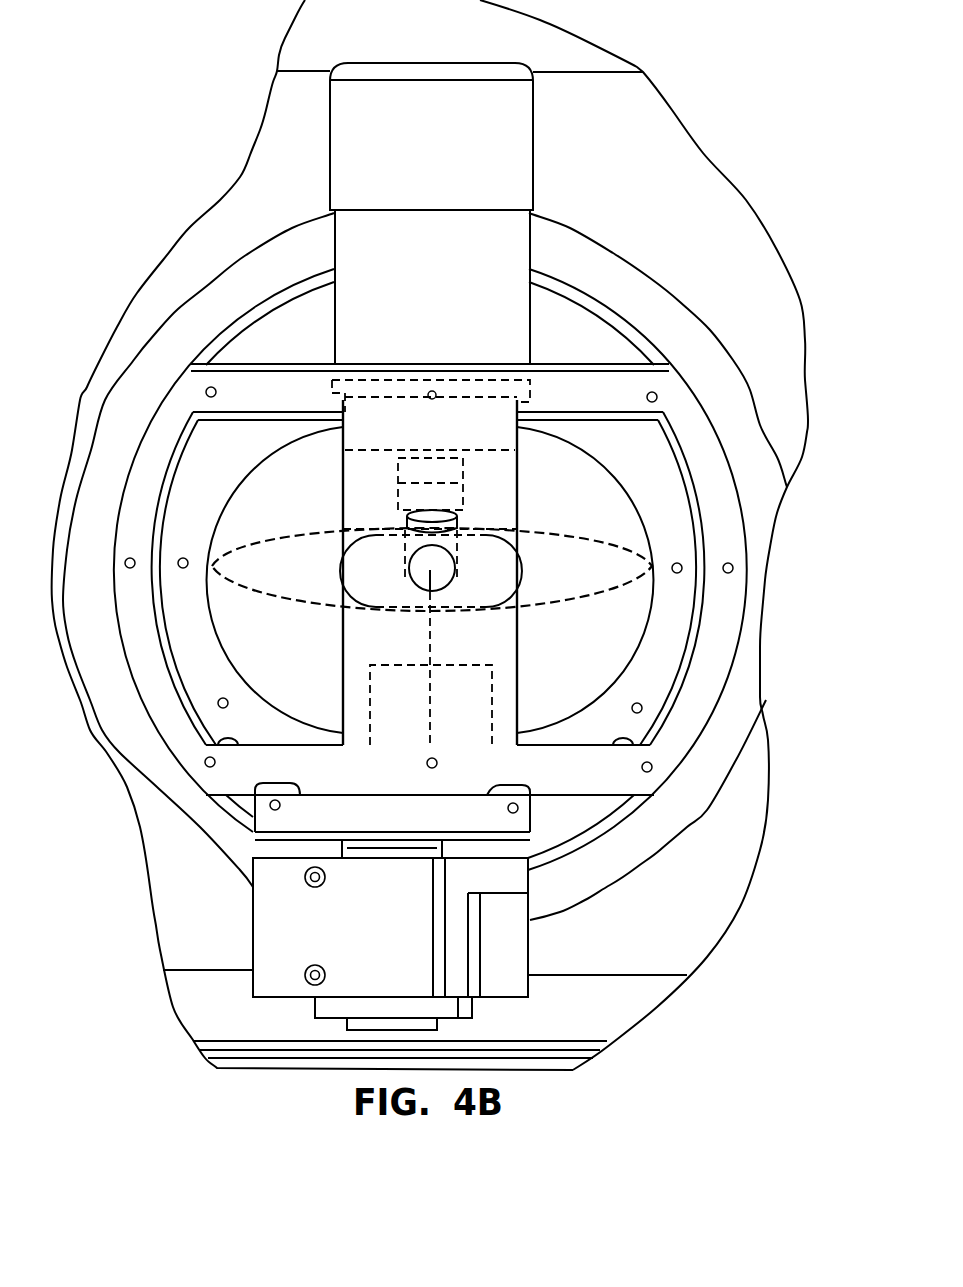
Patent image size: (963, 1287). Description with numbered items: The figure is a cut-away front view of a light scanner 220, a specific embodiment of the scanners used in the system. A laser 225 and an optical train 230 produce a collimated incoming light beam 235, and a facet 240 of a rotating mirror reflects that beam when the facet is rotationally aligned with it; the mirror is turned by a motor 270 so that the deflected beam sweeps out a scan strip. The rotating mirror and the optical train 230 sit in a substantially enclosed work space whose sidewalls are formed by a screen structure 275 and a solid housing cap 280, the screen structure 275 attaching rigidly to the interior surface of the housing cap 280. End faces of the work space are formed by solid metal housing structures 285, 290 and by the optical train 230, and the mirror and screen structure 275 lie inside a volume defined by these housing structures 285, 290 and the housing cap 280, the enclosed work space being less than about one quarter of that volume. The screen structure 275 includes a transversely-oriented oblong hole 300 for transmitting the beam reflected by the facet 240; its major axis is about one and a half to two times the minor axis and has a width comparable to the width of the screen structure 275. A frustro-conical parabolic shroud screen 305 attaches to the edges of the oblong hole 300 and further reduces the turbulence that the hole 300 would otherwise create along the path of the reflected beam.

The light scanner 220 is at (732, 170).
The laser 225 is at (408, 928).
The optical train 230 is at (467, 710).
The incoming light beam 235 is at (430, 615).
The facet 240 is at (430, 570).
The motor 270 is at (462, 321).
The screen structure 275 is at (343, 500).
The housing cap 280 is at (307, 659).
The housing structure 285 is at (400, 433).
The housing structure 290 is at (393, 784).
The oblong hole 300 is at (483, 577).
The shroud screen 305 is at (597, 543).